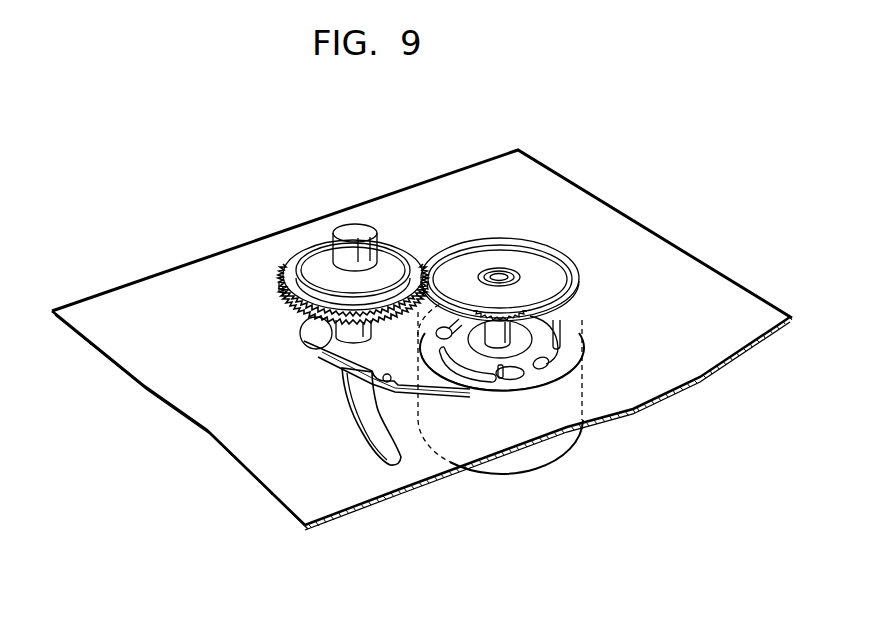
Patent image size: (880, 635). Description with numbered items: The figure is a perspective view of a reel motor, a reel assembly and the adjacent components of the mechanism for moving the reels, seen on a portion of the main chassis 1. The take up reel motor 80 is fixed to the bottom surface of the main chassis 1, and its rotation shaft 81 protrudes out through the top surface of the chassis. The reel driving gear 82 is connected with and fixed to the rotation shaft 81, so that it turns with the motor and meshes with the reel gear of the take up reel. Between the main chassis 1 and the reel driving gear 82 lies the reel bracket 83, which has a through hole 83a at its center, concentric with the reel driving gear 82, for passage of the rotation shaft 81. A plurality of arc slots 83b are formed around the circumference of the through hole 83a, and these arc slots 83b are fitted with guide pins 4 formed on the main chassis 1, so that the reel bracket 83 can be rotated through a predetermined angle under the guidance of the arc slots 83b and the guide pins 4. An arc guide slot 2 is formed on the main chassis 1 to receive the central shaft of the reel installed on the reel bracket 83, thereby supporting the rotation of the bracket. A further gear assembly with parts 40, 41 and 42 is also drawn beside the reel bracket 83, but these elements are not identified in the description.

The main chassis 1 is at (573, 215).
The drive gear 40 is at (289, 250).
The gear teeth 41 is at (278, 293).
The pinion 42 is at (352, 330).
The reel driving gear 82 is at (577, 317).
The reel bracket 83 is at (325, 338).
The through hole 83a is at (545, 366).
The arc slots 83b is at (557, 353).
The arc guide slot 2 is at (377, 440).
The take up reel motor 80 is at (498, 465).
The rotation shaft 81 is at (497, 343).
The guide pin 4 is at (500, 380).